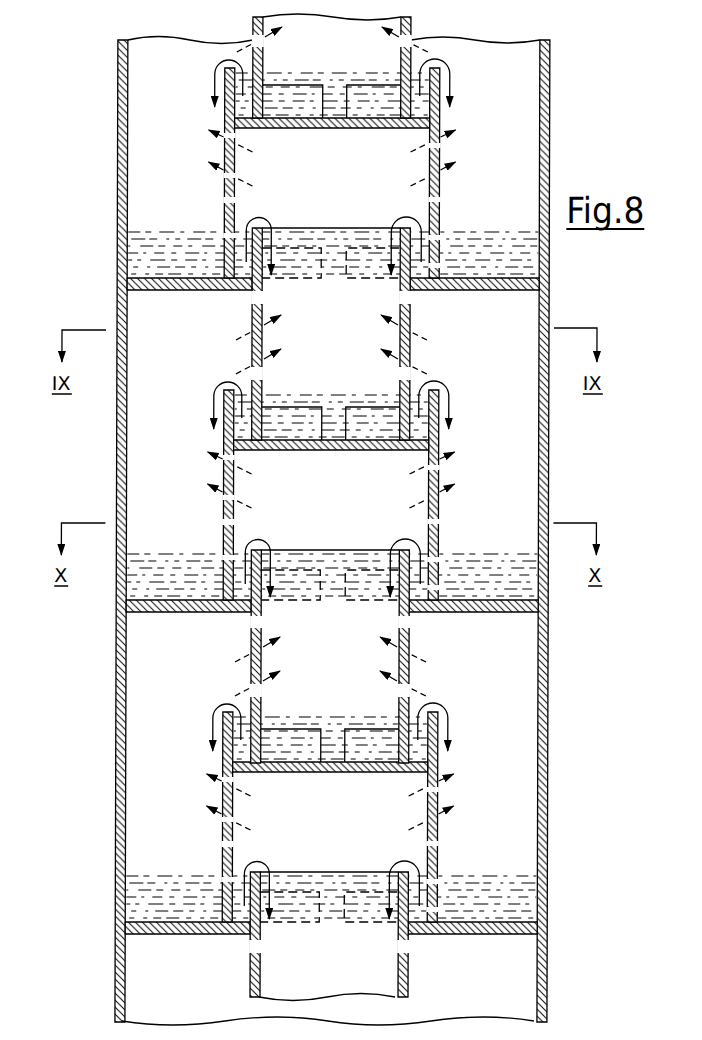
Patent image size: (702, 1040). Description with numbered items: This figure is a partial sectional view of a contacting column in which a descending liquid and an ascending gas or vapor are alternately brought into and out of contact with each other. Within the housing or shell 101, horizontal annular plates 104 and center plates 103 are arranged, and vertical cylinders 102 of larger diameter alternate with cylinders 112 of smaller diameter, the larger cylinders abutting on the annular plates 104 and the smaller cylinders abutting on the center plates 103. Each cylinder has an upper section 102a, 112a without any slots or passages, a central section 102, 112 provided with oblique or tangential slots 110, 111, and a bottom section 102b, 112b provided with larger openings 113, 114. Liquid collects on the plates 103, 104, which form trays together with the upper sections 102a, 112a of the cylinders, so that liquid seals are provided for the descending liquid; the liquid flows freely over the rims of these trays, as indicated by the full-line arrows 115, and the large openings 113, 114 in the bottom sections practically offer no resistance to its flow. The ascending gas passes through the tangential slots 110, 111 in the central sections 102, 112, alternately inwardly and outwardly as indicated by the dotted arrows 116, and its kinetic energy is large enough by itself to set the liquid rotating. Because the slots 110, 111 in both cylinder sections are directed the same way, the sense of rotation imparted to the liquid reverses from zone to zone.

The housing or shell 101 is at (550, 122).
The vertical cylinder of larger diameter 102 is at (441, 183).
The upper section of larger cylinder 102a is at (450, 87).
The bottom section of larger cylinder 102b is at (232, 257).
The center plate 103 is at (329, 118).
The horizontal annular plate 104 is at (156, 291).
The oblique or tangential slots 110 is at (256, 300).
The oblique or tangential slots 111 is at (234, 525).
The vertical cylinder of smaller diameter 112 is at (412, 348).
The upper section of smaller cylinder 112a is at (394, 231).
The bottom section of smaller cylinder 112b is at (311, 108).
The large openings 113 is at (432, 257).
The large openings 114 is at (407, 108).
The liquid flow arrows 115 is at (215, 87).
The gas flow arrows 116 is at (256, 188).